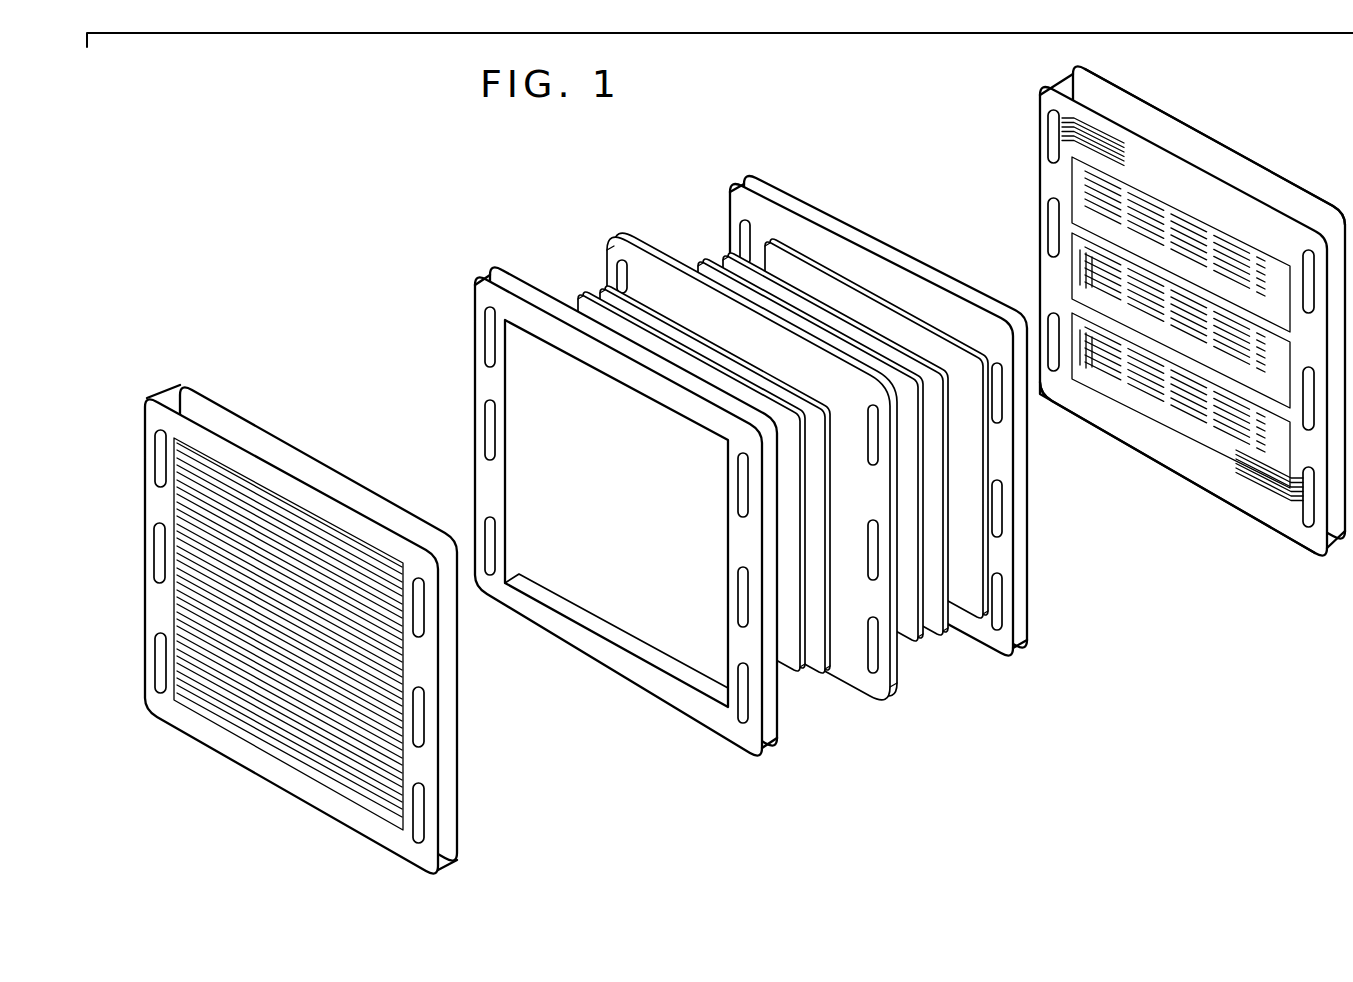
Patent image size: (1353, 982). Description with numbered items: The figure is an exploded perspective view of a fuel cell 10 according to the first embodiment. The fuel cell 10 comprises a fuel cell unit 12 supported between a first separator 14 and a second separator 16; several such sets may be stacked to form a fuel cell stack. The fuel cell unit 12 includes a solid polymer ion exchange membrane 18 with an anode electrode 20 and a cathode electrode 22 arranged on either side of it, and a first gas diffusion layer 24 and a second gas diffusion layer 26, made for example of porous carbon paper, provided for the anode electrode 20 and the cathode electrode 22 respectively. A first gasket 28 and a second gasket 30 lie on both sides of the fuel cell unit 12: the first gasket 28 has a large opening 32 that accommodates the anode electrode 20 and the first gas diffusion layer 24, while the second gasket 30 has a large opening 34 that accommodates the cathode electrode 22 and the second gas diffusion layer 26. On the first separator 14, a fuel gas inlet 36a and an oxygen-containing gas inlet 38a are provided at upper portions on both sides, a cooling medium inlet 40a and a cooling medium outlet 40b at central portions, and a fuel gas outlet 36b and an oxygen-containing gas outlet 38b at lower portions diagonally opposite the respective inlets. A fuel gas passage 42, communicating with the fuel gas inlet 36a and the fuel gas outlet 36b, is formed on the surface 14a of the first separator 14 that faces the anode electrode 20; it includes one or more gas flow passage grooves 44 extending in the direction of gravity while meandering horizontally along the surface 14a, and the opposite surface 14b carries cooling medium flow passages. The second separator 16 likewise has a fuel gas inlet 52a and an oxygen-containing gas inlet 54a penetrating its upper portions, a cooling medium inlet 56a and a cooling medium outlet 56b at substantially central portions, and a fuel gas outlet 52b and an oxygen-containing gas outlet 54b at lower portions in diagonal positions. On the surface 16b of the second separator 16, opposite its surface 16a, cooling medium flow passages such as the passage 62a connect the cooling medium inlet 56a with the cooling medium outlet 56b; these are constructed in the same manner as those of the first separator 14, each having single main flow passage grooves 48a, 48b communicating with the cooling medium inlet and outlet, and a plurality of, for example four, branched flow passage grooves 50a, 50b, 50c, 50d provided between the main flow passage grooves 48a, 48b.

The fuel cell 10 is at (761, 100).
The fuel cell unit 12 is at (727, 457).
The first separator 14 is at (1234, 87).
The surface 14a is at (1180, 472).
The surface 14b is at (1255, 180).
The second separator 16 is at (307, 599).
The surface 16a is at (370, 527).
The surface 16b is at (295, 797).
The solid polymer ion exchange membrane 18 is at (855, 692).
The anode electrode 20 is at (907, 637).
The cathode electrode 22 is at (813, 660).
The first gas diffusion layer 24 is at (927, 583).
The second gas diffusion layer 26 is at (590, 530).
The first gasket 28 is at (878, 230).
The second gasket 30 is at (616, 481).
The opening 32 is at (985, 470).
The opening 34 is at (570, 590).
The fuel gas inlet 36a is at (1055, 135).
The fuel gas outlet 36b is at (1305, 515).
The oxygen-containing gas inlet 38a is at (1300, 258).
The oxygen-containing gas outlet 38b is at (1052, 335).
The cooling medium inlet 40a is at (1298, 400).
The cooling medium outlet 40b is at (1052, 225).
The fuel gas passage 42 is at (1226, 198).
The gas flow passage groove 44 is at (1110, 145).
The main flow passage groove 48a is at (177, 510).
The main flow passage groove 48b is at (393, 660).
The branched flow passage groove 50a is at (228, 473).
The branched flow passage groove 50b is at (252, 493).
The branched flow passage groove 50c is at (313, 543).
The branched flow passage groove 50d is at (367, 577).
The fuel gas inlet 52a is at (190, 382).
The fuel gas outlet 52b is at (419, 812).
The oxygen-containing gas inlet 54a is at (418, 627).
The oxygen-containing gas outlet 54b is at (155, 693).
The cooling medium inlet 56a is at (424, 717).
The cooling medium outlet 56b is at (160, 553).
The cooling medium flow passage 62a is at (293, 499).